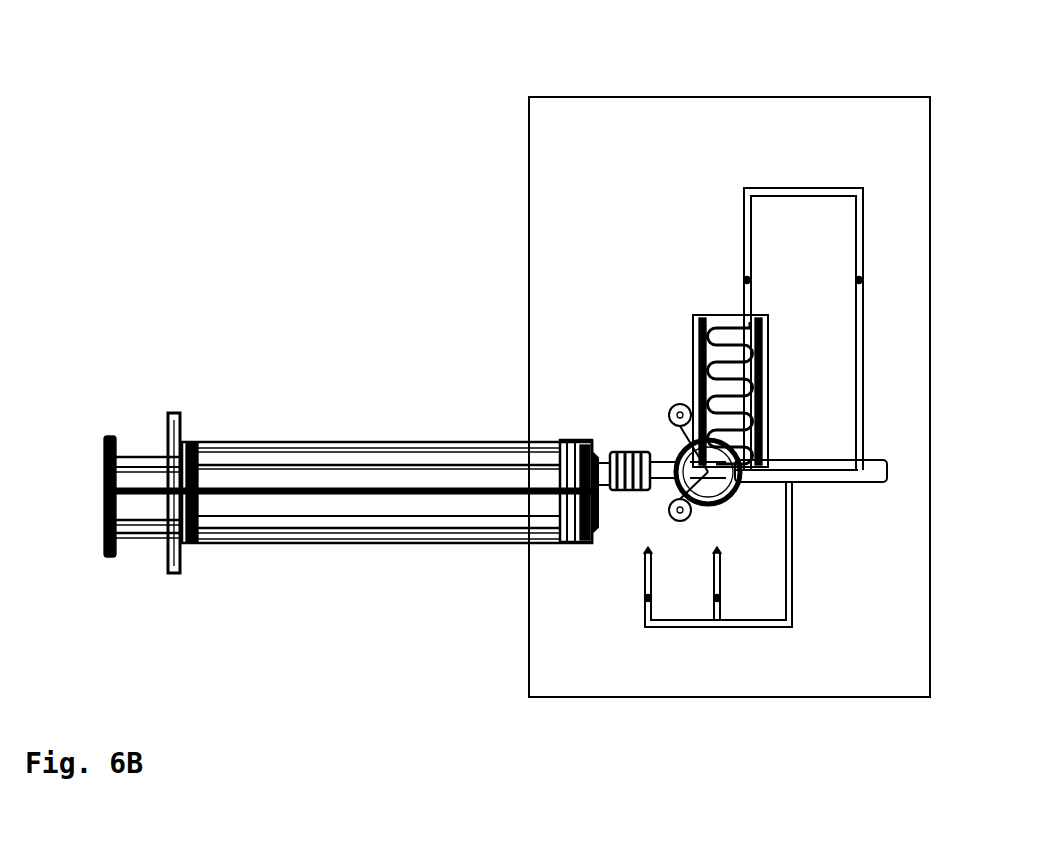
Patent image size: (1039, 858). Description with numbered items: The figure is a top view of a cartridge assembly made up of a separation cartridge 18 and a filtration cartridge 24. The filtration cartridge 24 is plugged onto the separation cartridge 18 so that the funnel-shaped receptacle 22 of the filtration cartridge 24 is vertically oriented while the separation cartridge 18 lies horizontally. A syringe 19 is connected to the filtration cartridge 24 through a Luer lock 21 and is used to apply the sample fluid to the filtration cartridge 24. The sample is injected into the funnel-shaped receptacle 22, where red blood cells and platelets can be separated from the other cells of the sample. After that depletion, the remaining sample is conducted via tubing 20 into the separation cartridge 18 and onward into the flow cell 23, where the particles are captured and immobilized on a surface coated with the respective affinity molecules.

The separation cartridge 18 is at (529, 665).
The syringe 19 is at (279, 440).
The tubing 20 is at (807, 188).
The Luer lock 21 is at (637, 457).
The funnel-shaped receptacle 22 is at (687, 447).
The flow cell 23 is at (693, 315).
The filtration cartridge 24 is at (878, 482).